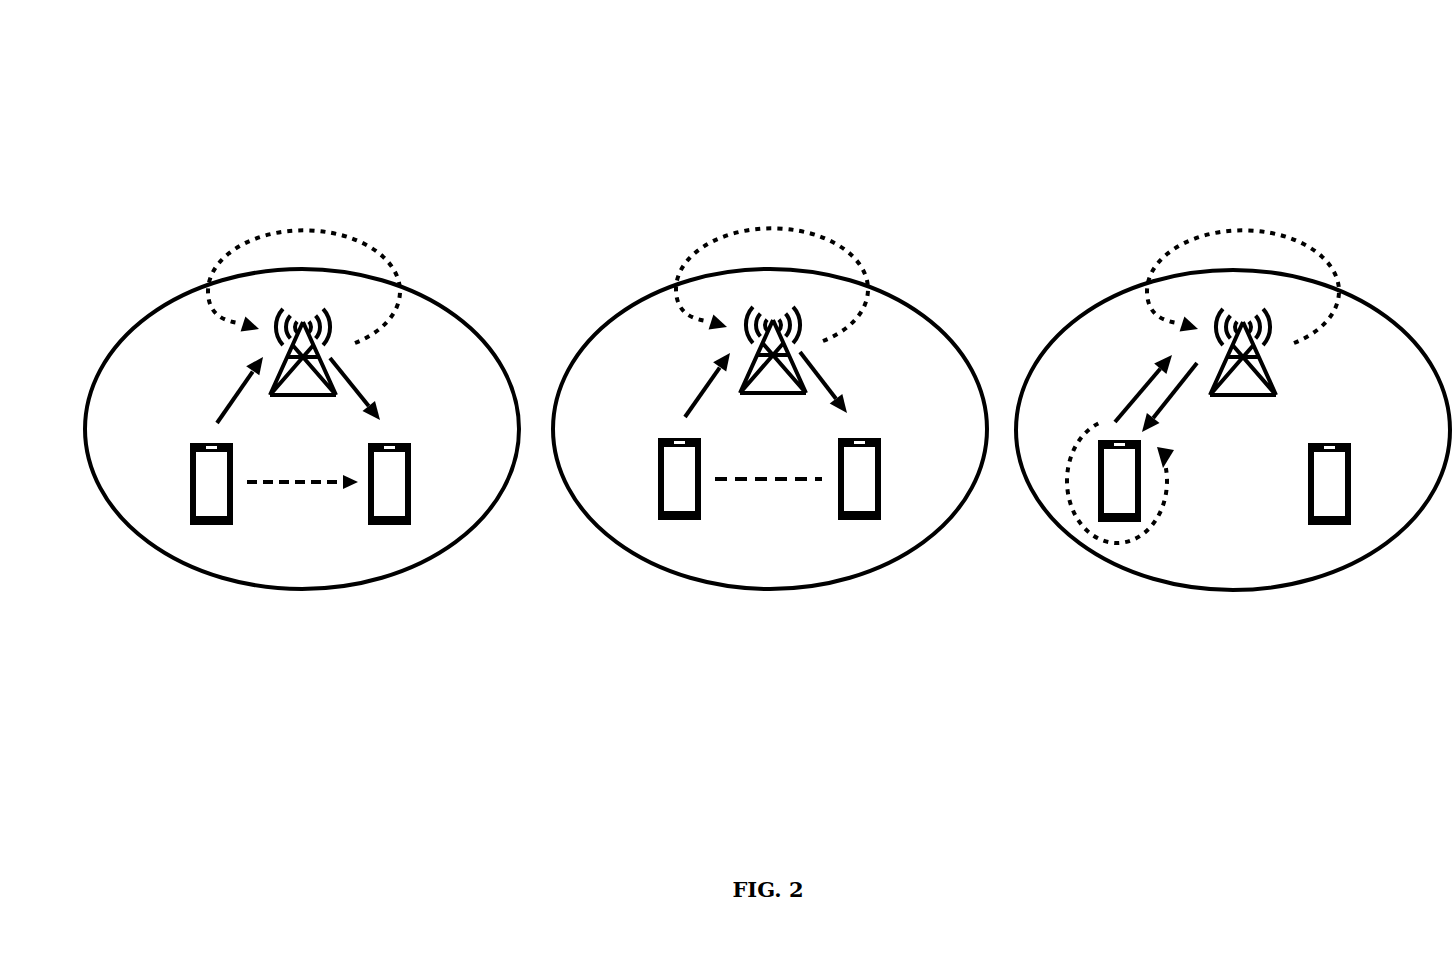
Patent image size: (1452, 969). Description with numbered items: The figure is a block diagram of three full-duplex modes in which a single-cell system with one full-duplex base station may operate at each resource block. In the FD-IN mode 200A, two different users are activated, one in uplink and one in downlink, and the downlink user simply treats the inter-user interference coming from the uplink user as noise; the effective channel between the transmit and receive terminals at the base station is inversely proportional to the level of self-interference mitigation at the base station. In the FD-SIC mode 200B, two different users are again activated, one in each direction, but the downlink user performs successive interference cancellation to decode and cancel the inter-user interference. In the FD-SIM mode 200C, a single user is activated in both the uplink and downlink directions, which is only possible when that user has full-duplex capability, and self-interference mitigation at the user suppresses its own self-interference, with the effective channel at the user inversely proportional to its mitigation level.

The FD-IN mode of operation 200A is at (332, 79).
The FD-SIC mode of operation 200B is at (798, 79).
The FD-SIM mode of operation 200C is at (1267, 79).